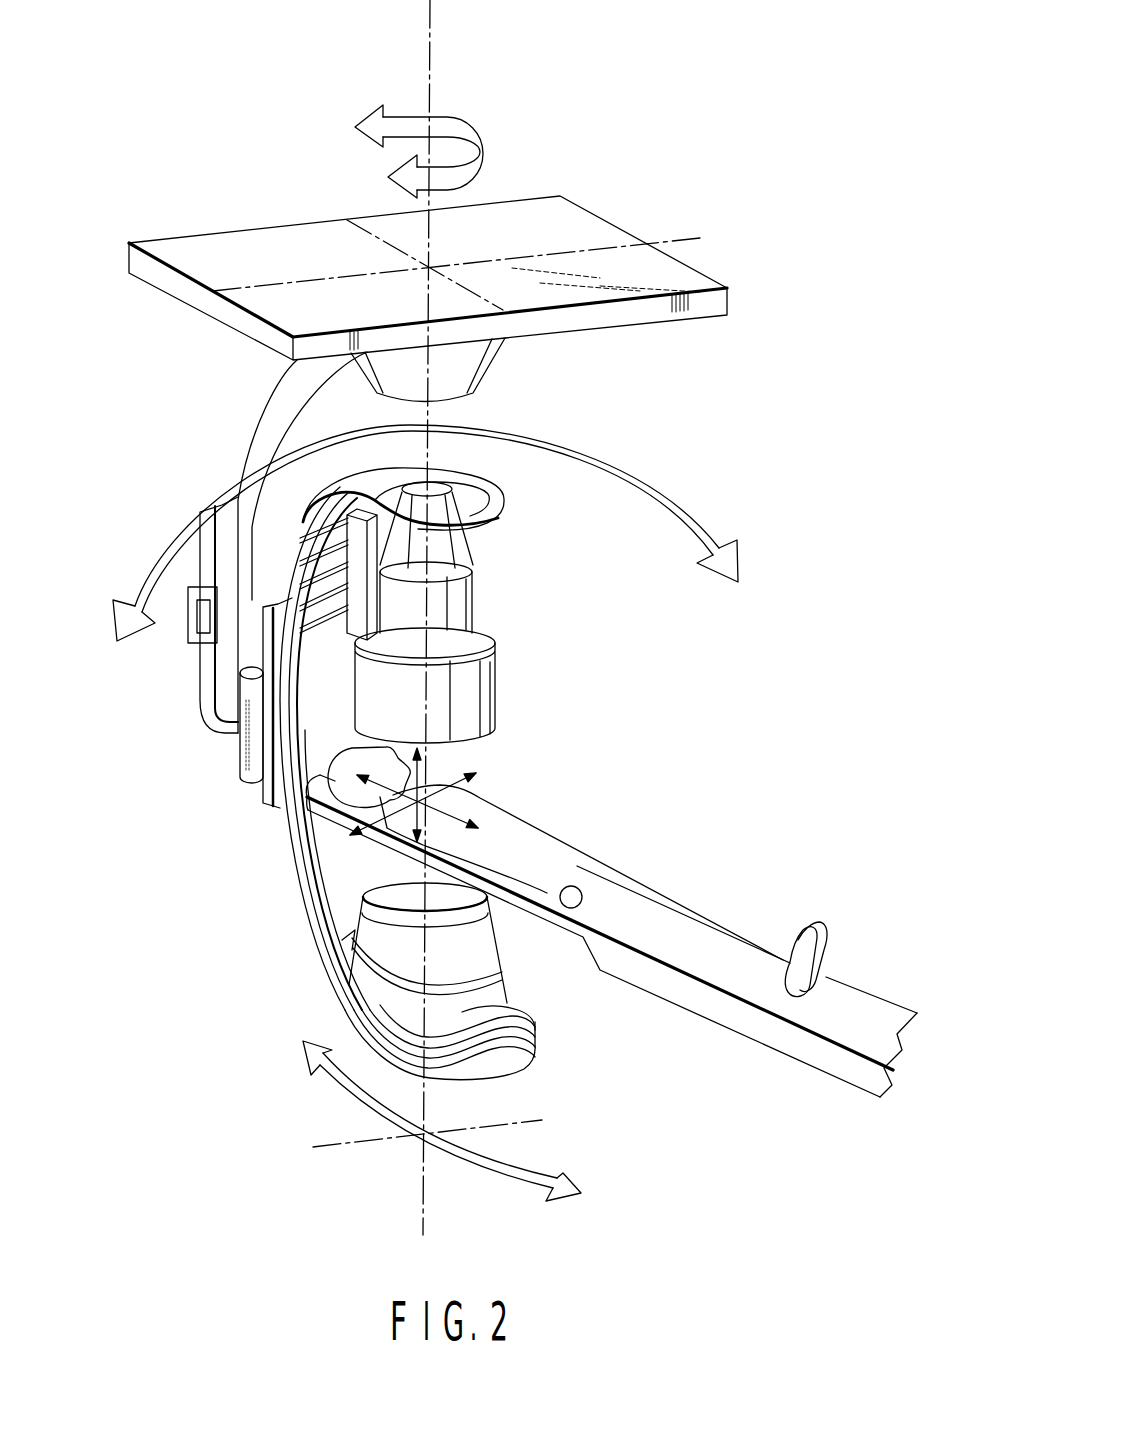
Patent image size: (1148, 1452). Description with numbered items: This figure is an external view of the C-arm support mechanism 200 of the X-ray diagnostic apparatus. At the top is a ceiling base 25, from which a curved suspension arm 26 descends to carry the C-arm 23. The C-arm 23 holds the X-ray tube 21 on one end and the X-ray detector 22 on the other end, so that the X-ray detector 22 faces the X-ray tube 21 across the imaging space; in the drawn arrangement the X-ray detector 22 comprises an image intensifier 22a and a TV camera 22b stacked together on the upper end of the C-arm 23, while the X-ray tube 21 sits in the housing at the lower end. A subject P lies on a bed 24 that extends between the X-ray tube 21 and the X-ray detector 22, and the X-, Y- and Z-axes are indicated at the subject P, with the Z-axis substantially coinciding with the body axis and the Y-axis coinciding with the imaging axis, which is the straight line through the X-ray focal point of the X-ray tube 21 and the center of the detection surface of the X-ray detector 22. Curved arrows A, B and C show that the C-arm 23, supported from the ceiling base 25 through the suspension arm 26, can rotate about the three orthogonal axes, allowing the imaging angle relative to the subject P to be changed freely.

The C-arm support mechanism 200 is at (728, 232).
The X-ray tube 21 is at (507, 997).
The X-ray detector 22 is at (515, 643).
The image intensifier 22a is at (470, 705).
The TV camera 22b is at (473, 547).
The C-arm 23 is at (270, 590).
The bed 24 is at (872, 990).
The ceiling base 25 is at (670, 313).
The suspension arm 26 is at (260, 440).
The subject P is at (827, 930).